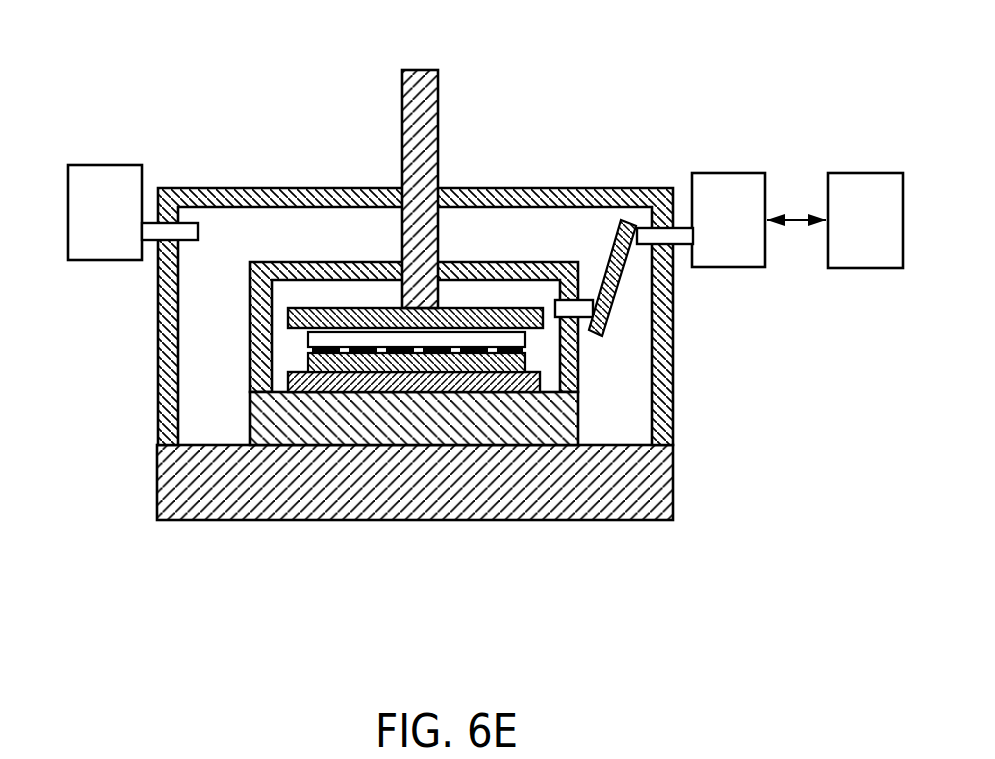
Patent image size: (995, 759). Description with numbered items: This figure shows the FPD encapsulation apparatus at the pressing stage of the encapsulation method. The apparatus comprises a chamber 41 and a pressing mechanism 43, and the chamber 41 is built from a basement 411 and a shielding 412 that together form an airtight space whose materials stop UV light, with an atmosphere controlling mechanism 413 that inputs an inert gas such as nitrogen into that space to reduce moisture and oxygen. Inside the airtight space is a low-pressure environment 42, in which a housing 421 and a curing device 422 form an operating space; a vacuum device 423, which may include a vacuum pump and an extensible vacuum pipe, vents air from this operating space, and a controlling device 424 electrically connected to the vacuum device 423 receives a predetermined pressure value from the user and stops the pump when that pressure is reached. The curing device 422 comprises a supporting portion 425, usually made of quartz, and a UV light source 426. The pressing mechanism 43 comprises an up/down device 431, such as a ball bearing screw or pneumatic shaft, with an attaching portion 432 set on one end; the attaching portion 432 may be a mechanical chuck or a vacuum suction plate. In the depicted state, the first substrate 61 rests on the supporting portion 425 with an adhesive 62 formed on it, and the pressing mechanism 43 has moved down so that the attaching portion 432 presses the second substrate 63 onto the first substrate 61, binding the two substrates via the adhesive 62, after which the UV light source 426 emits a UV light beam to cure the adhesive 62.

The chamber 41 is at (345, 267).
The basement 411 is at (182, 468).
The shielding 412 is at (162, 358).
The atmosphere controlling mechanism 413 is at (112, 262).
The low-pressure environment 42 is at (567, 374).
The housing 421 is at (577, 350).
The curing device 422 is at (578, 418).
The vacuum device 423 is at (728, 267).
The controlling device 424 is at (835, 266).
The supporting portion 425 is at (353, 384).
The UV light source 426 is at (278, 420).
The pressing mechanism 43 is at (433, 199).
The up/down device 431 is at (422, 133).
The attaching portion 432 is at (483, 317).
The first substrate 61 is at (424, 352).
The adhesive 62 is at (497, 357).
The second substrate 63 is at (520, 333).